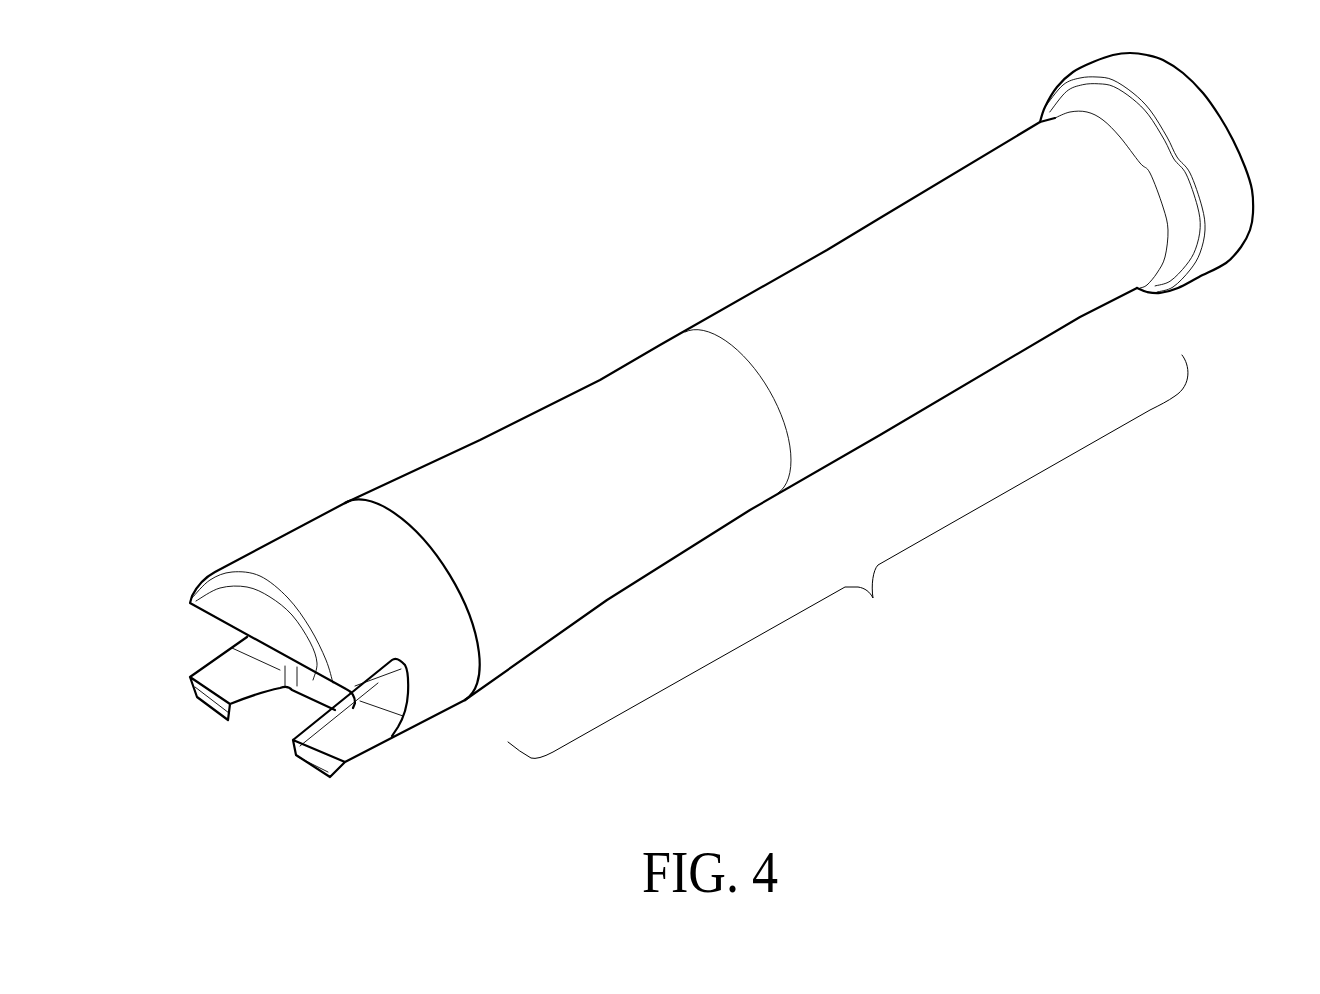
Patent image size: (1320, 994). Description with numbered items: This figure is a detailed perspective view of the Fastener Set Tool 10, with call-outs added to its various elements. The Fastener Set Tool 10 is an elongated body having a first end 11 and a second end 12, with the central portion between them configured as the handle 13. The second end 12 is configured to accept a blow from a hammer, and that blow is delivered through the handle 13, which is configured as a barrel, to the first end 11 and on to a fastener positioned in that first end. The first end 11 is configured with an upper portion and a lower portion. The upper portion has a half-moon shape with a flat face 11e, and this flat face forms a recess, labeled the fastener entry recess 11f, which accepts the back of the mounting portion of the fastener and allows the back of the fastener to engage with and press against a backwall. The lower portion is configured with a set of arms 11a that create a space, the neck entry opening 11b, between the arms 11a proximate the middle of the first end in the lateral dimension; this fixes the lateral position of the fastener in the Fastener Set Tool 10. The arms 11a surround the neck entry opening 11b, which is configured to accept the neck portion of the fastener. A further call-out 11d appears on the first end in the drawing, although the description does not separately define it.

The Fastener Set Tool 10 is at (667, 214).
The first end 11 is at (333, 668).
The arms 11a is at (215, 670).
The neck entry opening 11b is at (285, 720).
The slot opening 11d is at (350, 630).
The flat face 11e is at (252, 610).
The fastener entry recess 11f is at (380, 717).
The second end 12 is at (1227, 127).
The handle 13 is at (848, 556).